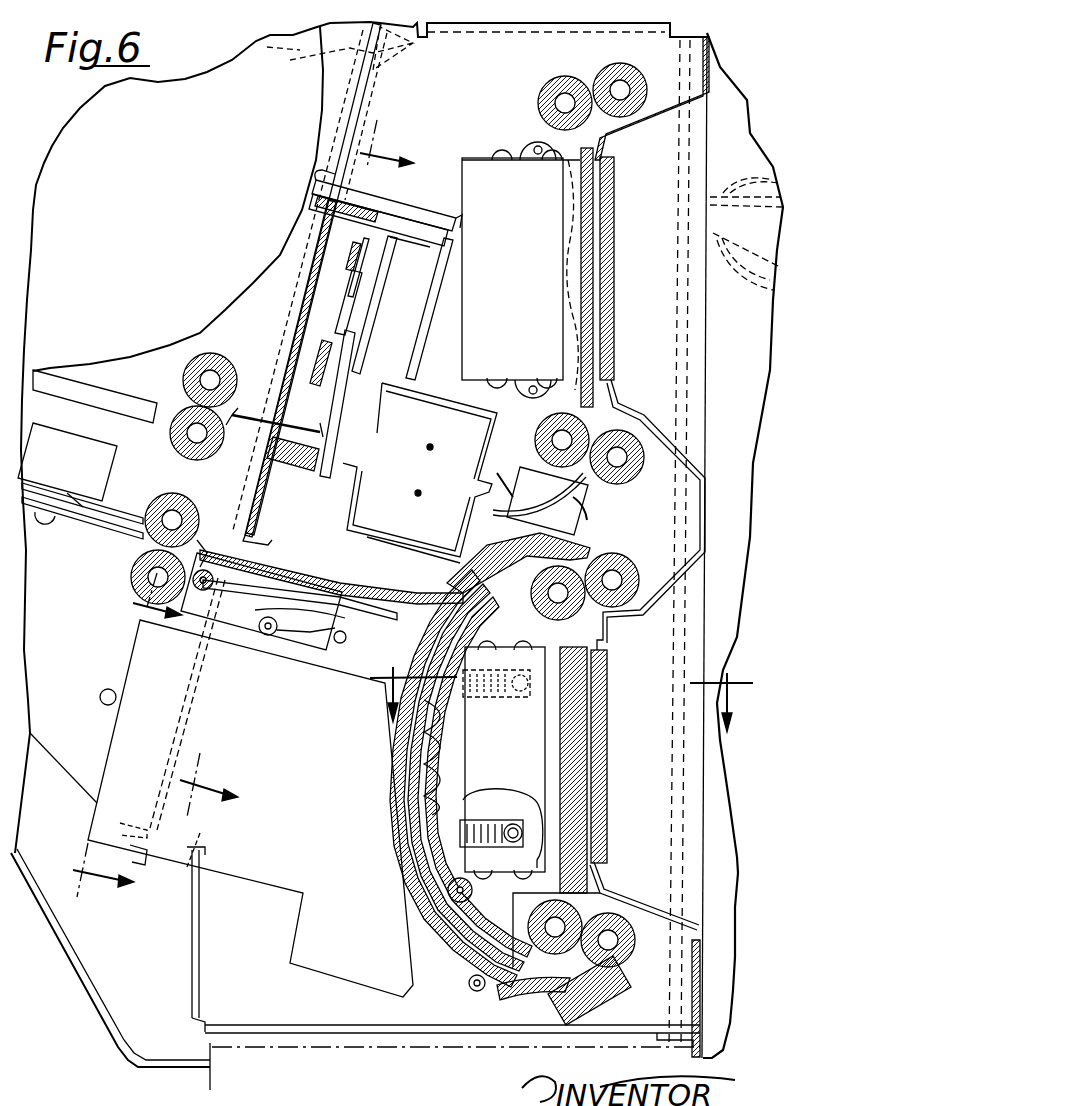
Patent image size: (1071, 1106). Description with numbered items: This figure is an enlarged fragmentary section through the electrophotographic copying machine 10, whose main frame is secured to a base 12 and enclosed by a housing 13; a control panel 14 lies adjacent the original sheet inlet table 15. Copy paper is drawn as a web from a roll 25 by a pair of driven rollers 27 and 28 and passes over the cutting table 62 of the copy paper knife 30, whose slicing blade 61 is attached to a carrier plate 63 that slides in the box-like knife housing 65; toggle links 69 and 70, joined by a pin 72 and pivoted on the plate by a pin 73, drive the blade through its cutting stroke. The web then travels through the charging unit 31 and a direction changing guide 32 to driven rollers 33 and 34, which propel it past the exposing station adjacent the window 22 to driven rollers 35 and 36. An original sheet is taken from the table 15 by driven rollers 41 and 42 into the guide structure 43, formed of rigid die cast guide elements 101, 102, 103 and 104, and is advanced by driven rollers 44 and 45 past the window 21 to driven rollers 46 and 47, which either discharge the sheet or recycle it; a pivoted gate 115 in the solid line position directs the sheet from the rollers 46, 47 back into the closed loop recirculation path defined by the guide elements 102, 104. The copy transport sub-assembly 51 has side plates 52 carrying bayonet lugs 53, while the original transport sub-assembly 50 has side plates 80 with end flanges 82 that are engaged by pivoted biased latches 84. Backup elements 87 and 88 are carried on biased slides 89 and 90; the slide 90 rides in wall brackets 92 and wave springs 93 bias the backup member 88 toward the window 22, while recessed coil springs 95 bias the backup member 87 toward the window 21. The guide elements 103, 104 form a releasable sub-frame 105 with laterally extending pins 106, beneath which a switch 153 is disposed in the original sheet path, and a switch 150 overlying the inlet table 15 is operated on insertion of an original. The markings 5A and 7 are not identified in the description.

The rod 5A is at (128, 823).
The section line 7 is at (116, 735).
The electrophotographic copying machine 10 is at (299, 472).
The base 12 is at (206, 1078).
The housing 13 is at (82, 987).
The control panel 14 is at (565, 687).
The original sheet inlet table 15 is at (92, 530).
The window 21 is at (607, 780).
The window 22 is at (613, 302).
The copy paper roll 25 is at (230, 277).
The driven roller 27 is at (172, 447).
The driven roller 28 is at (187, 365).
The copy paper knife 30 is at (293, 380).
The charging unit 31 is at (352, 514).
The direction changing guide 32 is at (587, 510).
The driven roller 33 is at (610, 484).
The driven roller 34 is at (549, 440).
The driven roller 35 is at (625, 67).
The driven roller 36 is at (570, 80).
The driven roller 41 is at (132, 563).
The driven roller 42 is at (147, 505).
The guide structure 43 is at (393, 592).
The driven roller 44 is at (638, 570).
The driven roller 45 is at (532, 598).
The driven roller 46 is at (633, 942).
The driven roller 47 is at (553, 900).
The original transport sub-assembly 50 is at (205, 951).
The copy transport sub-assembly 51 is at (75, 752).
The side plate 52 is at (45, 585).
The bayonet lug 53 is at (143, 860).
The slicing blade 61 is at (333, 404).
The cutting table 62 is at (300, 470).
The carrier plate 63 is at (377, 307).
The knife housing 65 is at (367, 213).
The toggle link 69 is at (307, 400).
The toggle link 70 is at (352, 286).
The pin 72 is at (314, 352).
The pin 73 is at (352, 250).
The side plate 80 is at (207, 973).
The end flange 82 is at (667, 983).
The pivoted biased latch 84 is at (746, 223).
The backup element 87 is at (580, 795).
The backup element 88 is at (592, 320).
The biased slide 89 is at (532, 770).
The biased slide 90 is at (520, 274).
The wall bracket 92 is at (485, 157).
The wave spring 93 is at (577, 240).
The recessed coil spring 95 is at (500, 823).
The guide element 101 is at (462, 556).
The guide element 102 is at (483, 603).
The guide element 103 is at (328, 580).
The guide element 104 is at (412, 837).
The releasable sub-frame 105 is at (283, 887).
The laterally extending pin 106 is at (473, 990).
The gate 115 is at (530, 995).
The switch 150 is at (117, 437).
The switch 153 is at (307, 650).